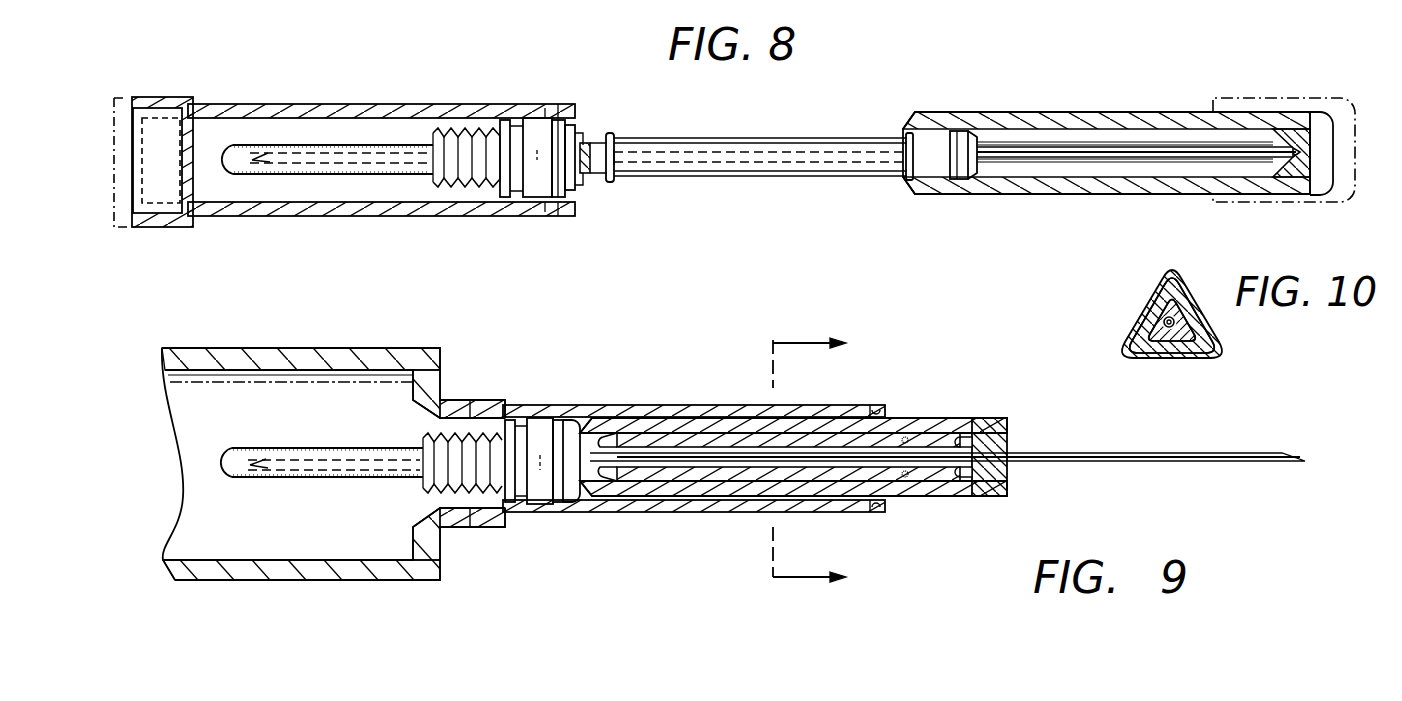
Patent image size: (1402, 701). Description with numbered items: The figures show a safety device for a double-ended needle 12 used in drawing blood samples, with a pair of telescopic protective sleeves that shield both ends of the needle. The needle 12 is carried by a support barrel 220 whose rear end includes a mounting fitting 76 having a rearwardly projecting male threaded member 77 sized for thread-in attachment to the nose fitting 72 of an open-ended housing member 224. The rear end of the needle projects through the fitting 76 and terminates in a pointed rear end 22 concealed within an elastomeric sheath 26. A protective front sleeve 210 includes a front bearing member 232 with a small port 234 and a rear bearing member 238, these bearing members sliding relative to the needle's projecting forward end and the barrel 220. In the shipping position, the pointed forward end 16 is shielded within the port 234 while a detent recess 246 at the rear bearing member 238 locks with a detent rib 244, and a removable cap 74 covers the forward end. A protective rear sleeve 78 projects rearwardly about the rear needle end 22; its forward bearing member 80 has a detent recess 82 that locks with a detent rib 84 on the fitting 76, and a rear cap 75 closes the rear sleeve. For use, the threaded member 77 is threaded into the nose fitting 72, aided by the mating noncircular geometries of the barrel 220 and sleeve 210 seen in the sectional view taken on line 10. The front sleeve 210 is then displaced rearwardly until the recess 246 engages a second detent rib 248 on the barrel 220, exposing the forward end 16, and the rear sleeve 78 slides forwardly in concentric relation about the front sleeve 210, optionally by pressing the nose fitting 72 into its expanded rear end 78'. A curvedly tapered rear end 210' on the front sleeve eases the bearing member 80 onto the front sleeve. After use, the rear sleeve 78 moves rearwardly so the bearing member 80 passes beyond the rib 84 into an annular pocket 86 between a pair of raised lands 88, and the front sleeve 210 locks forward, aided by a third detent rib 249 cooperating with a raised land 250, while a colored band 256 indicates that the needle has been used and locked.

In FIG. 8, the double-ended needle 12 is at (1135, 147).
In FIG. 9, the double-ended needle 12 is at (1117, 452).
In FIG. 10, the double-ended needle 12 is at (1168, 292).
In FIG. 8, the pointed forward end 16 is at (1300, 152).
In FIG. 8, the pointed rear end 22 is at (288, 155).
In FIG. 9, the pointed rear end 22 is at (285, 461).
In FIG. 8, the elastomeric sheath 26 is at (368, 177).
In FIG. 9, the elastomeric sheath 26 is at (288, 479).
In FIG. 9, the nose fitting 72 is at (478, 508).
In FIG. 8, the removable cap 74 is at (1352, 98).
In FIG. 8, the rear cap 75 is at (107, 98).
In FIG. 8, the mounting fitting 76 is at (588, 120).
In FIG. 8, the male threaded member 77 is at (483, 168).
In FIG. 9, the male threaded member 77 is at (450, 462).
In FIG. 8, the protective rear sleeve 78 is at (381, 139).
In FIG. 9, the protective rear sleeve 78 is at (694, 424).
In FIG. 10, the protective rear sleeve 78 is at (1172, 334).
In FIG. 8, the expanded rear end 78' is at (171, 133).
In FIG. 9, the expanded rear end 78' is at (479, 412).
In FIG. 8, the forward bearing member 80 is at (560, 104).
In FIG. 9, the forward bearing member 80 is at (868, 405).
In FIG. 8, the detent recess 82 is at (600, 185).
In FIG. 8, the detent rib 84 is at (610, 150).
In FIG. 9, the detent rib 84 is at (577, 503).
In FIG. 8, the annular pocket 86 is at (536, 198).
In FIG. 9, the annular pocket 86 is at (530, 420).
In FIG. 8, the raised lands 88 is at (545, 120).
In FIG. 9, the raised lands 88 is at (545, 503).
In FIG. 8, the protective front sleeve 210 is at (1106, 167).
In FIG. 9, the protective front sleeve 210 is at (793, 402).
In FIG. 10, the protective front sleeve 210 is at (1189, 292).
In FIG. 8, the curvedly tapered rear end 210' is at (866, 127).
In FIG. 8, the support barrel 220 is at (765, 178).
In FIG. 9, the support barrel 220 is at (822, 482).
In FIG. 10, the support barrel 220 is at (1147, 300).
In FIG. 9, the housing member 224 is at (290, 348).
In FIG. 8, the front bearing member 232 is at (1293, 130).
In FIG. 9, the front bearing member 232 is at (1005, 425).
In FIG. 8, the port 234 is at (1333, 165).
In FIG. 8, the rear bearing member 238 is at (918, 182).
In FIG. 9, the rear bearing member 238 is at (610, 482).
In FIG. 8, the detent rib 244 is at (905, 155).
In FIG. 8, the detent recess 246 is at (950, 131).
In FIG. 8, the second detent rib 248 is at (615, 160).
In FIG. 9, the second detent rib 248 is at (600, 418).
In FIG. 9, the third detent rib 249 is at (965, 440).
In FIG. 9, the raised land 250 is at (975, 485).
In FIG. 9, the colored band 256 is at (908, 482).
In FIG. 9, the section line 10- 10 is at (831, 462).